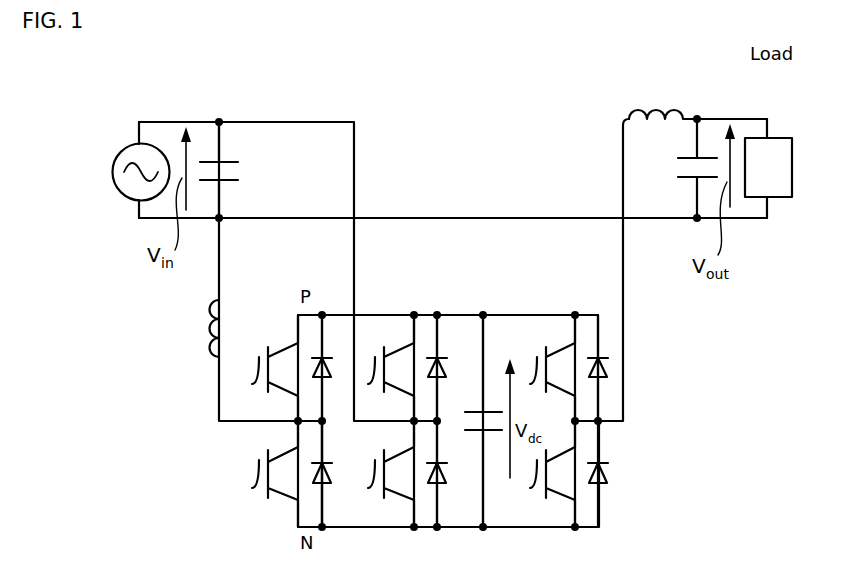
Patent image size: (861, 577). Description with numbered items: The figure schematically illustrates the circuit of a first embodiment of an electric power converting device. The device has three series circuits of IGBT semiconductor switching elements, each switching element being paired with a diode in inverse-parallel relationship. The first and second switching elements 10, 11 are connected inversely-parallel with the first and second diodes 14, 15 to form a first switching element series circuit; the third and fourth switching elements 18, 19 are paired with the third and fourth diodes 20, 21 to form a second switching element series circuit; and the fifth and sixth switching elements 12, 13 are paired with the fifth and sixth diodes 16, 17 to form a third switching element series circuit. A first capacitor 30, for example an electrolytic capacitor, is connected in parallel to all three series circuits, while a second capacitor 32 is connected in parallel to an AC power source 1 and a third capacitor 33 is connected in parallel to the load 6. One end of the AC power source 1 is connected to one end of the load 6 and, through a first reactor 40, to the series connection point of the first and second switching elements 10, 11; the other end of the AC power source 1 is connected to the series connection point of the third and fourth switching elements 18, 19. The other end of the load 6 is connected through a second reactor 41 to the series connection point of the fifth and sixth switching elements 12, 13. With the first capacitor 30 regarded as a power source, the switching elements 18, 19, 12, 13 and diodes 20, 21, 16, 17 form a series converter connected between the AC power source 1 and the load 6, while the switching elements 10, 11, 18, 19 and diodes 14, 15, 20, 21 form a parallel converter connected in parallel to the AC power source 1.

The AC power source 1 is at (127, 140).
The load 6 is at (772, 138).
The first semiconductor switching element 10 is at (279, 344).
The second semiconductor switching element 11 is at (280, 500).
The fifth semiconductor switching element 12 is at (559, 338).
The sixth semiconductor switching element 13 is at (555, 505).
The first diode 14 is at (328, 345).
The second diode 15 is at (332, 486).
The fifth diode 16 is at (608, 352).
The sixth diode 17 is at (606, 488).
The third semiconductor switching element 18 is at (397, 343).
The fourth semiconductor switching element 19 is at (393, 500).
The third diode 20 is at (443, 345).
The fourth diode 21 is at (443, 490).
The first capacitor 30 is at (470, 432).
The second capacitor 32 is at (243, 171).
The third capacitor 33 is at (675, 172).
The first reactor 40 is at (207, 325).
The second reactor 41 is at (649, 108).